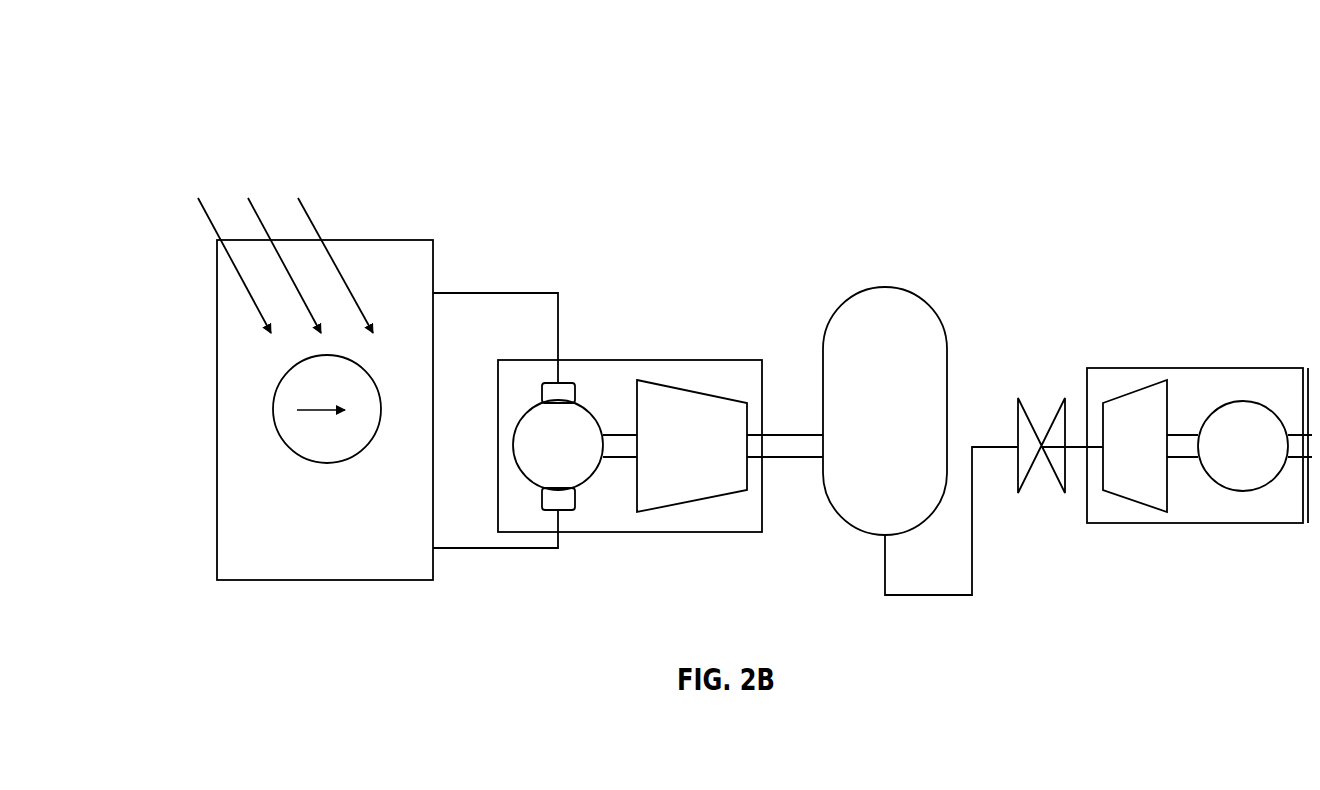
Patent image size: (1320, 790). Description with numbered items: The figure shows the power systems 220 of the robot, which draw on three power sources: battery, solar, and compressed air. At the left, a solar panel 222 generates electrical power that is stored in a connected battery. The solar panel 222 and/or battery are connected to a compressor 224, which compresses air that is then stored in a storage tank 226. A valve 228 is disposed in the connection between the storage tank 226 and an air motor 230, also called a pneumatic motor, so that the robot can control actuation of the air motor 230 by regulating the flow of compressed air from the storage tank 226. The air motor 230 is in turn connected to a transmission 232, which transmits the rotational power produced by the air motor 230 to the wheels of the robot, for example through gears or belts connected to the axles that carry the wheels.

The power systems 220 is at (176, 84).
The solar panel 222 is at (271, 181).
The compressor 224 is at (660, 360).
The storage tank 226 is at (886, 286).
The valve 228 is at (1044, 397).
The air motor 230 is at (1142, 368).
The transmission 232 is at (1230, 524).